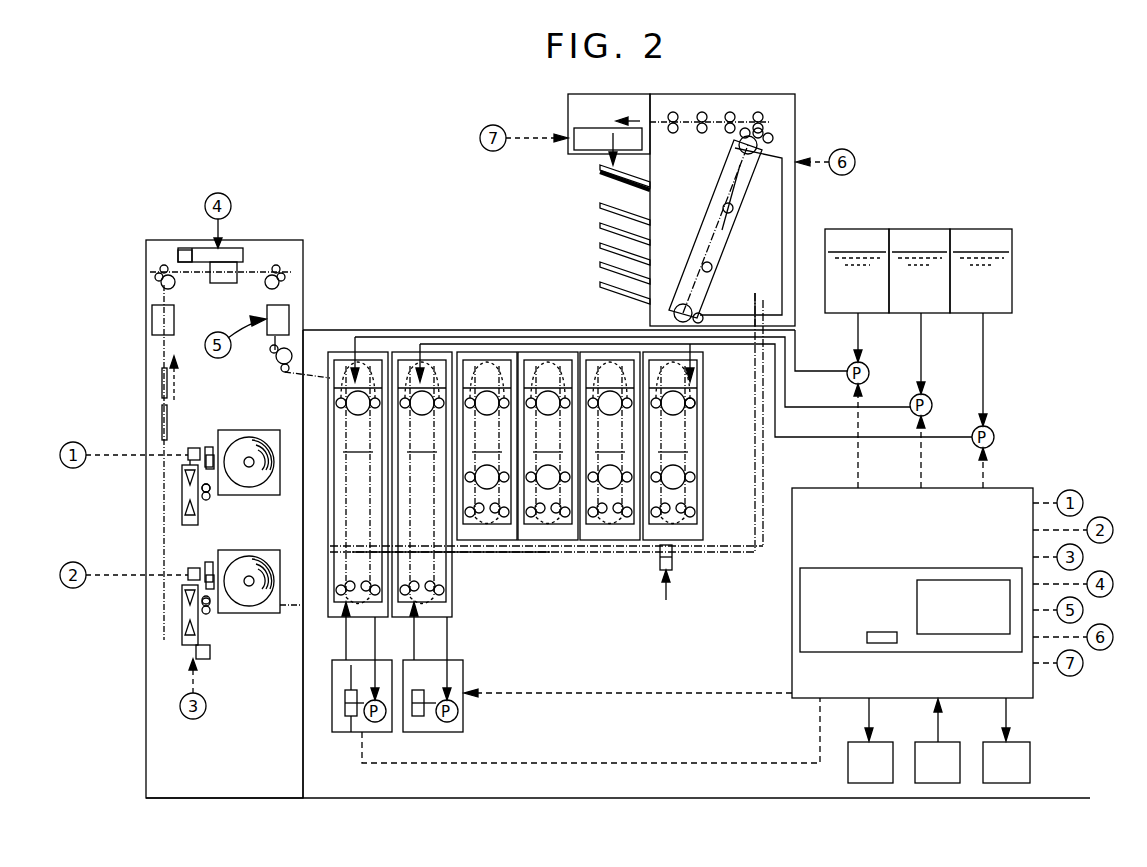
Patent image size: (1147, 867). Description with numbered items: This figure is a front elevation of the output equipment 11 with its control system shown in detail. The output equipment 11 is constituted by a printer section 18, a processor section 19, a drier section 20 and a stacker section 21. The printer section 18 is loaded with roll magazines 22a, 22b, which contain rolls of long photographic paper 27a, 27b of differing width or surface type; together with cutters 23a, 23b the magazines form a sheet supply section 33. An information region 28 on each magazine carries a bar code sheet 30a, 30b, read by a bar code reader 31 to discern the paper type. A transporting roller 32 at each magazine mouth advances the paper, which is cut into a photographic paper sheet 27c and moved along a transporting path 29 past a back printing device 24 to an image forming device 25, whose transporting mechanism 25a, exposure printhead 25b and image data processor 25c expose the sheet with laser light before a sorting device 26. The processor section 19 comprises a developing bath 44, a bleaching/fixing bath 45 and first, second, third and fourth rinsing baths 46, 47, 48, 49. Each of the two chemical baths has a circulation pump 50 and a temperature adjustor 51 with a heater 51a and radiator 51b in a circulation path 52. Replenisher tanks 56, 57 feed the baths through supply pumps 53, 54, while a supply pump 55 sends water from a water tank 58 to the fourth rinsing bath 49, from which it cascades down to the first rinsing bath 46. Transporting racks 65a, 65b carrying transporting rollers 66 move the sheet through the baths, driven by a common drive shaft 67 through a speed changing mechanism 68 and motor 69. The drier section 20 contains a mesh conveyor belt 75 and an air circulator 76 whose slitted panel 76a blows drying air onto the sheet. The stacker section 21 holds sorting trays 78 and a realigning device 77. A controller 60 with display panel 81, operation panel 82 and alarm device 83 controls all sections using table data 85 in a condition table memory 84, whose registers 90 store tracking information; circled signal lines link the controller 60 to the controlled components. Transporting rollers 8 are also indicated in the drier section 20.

The output equipment 11 is at (335, 180).
The printer section 18 is at (146, 258).
The processor section 19 is at (470, 600).
The drier section 20 is at (805, 128).
The stacker section 21 is at (492, 204).
The conveying rollers 8 is at (715, 122).
The roll magazine 22a is at (241, 425).
The roll magazine 22b is at (272, 613).
The cutter 23a is at (182, 500).
The cutter 23b is at (182, 620).
The back printing device 24 is at (152, 318).
The image forming device 25 is at (205, 245).
The transporting mechanism 25a is at (216, 283).
The exposure printhead 25b is at (238, 250).
The image data processor 25c is at (185, 250).
The sorting device 26 is at (266, 306).
The photographic paper 27a is at (260, 436).
The photographic paper 27b is at (253, 608).
The photographic paper sheet 27c is at (160, 380).
The information region 28 is at (210, 447).
The transporting path 29 is at (162, 352).
The bar code sheet 30a is at (204, 486).
The bar code sheet 30b is at (204, 600).
The bar code reader 31 is at (188, 452).
The transporting roller 32 is at (207, 497).
The sheet supply section 33 is at (112, 606).
The developing bath 44 is at (328, 512).
The bleaching/fixing bath 45 is at (422, 484).
The first rinsing bath 46 is at (487, 446).
The second rinsing bath 47 is at (548, 446).
The third rinsing bath 48 is at (610, 446).
The fourth rinsing bath 49 is at (673, 446).
The circulation pump 50 is at (382, 722).
The temperature adjustor 51 is at (330, 718).
The heater 51a is at (345, 694).
The radiator 51b is at (348, 730).
The circulation path 52 is at (346, 642).
The supply pump 53 is at (866, 364).
The supply pump 54 is at (930, 394).
The supply pump 55 is at (990, 426).
The replenisher tank 56 is at (858, 229).
The replenisher tank 57 is at (920, 229).
The water tank 58 is at (982, 229).
The controller 60 is at (1012, 488).
The transporting rack 65a is at (345, 335).
The transporting rack 65b is at (490, 350).
The transporting rollers 66 is at (698, 404).
The drive shaft 67 is at (548, 556).
The speed changing mechanism 68 is at (660, 565).
The motor 69 is at (674, 575).
The conveyor belt 75 is at (722, 188).
The air circulator 76 is at (770, 266).
The slitted panel 76a is at (725, 232).
The realigning device 77 is at (586, 128).
The sorting trays 78 is at (598, 250).
The display panel 81 is at (885, 775).
The operation panel 82 is at (952, 775).
The alarm device 83 is at (1021, 775).
The condition table memory 84 is at (828, 652).
The table data 85 is at (960, 634).
The registers 90 is at (882, 645).